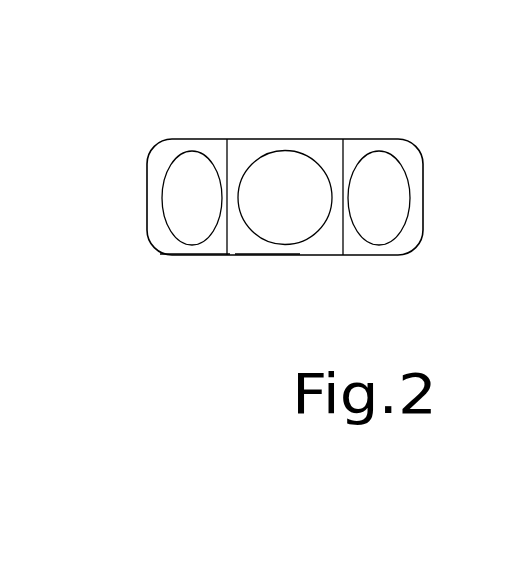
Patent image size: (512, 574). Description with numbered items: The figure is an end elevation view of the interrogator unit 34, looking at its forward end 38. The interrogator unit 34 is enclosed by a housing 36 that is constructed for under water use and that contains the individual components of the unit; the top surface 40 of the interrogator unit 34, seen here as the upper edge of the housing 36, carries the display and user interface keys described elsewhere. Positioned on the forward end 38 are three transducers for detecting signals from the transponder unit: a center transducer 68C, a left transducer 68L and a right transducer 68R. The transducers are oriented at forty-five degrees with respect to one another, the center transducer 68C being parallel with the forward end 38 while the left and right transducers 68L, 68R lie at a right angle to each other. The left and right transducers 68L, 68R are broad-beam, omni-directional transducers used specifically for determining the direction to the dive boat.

The interrogator unit 34 is at (323, 118).
The top surface 40 is at (245, 140).
The right transducer 68R is at (185, 198).
The center transducer 68C is at (312, 212).
The left transducer 68L is at (375, 197).
The forward end 38 is at (215, 247).
The housing 36 is at (260, 255).